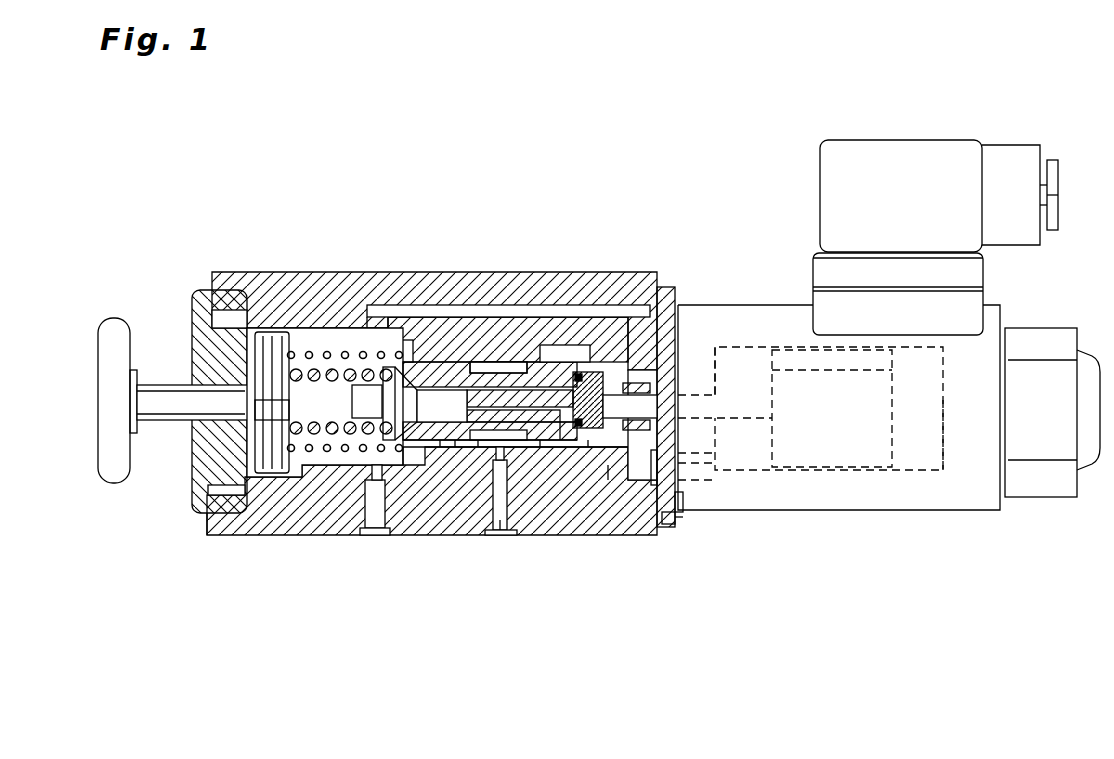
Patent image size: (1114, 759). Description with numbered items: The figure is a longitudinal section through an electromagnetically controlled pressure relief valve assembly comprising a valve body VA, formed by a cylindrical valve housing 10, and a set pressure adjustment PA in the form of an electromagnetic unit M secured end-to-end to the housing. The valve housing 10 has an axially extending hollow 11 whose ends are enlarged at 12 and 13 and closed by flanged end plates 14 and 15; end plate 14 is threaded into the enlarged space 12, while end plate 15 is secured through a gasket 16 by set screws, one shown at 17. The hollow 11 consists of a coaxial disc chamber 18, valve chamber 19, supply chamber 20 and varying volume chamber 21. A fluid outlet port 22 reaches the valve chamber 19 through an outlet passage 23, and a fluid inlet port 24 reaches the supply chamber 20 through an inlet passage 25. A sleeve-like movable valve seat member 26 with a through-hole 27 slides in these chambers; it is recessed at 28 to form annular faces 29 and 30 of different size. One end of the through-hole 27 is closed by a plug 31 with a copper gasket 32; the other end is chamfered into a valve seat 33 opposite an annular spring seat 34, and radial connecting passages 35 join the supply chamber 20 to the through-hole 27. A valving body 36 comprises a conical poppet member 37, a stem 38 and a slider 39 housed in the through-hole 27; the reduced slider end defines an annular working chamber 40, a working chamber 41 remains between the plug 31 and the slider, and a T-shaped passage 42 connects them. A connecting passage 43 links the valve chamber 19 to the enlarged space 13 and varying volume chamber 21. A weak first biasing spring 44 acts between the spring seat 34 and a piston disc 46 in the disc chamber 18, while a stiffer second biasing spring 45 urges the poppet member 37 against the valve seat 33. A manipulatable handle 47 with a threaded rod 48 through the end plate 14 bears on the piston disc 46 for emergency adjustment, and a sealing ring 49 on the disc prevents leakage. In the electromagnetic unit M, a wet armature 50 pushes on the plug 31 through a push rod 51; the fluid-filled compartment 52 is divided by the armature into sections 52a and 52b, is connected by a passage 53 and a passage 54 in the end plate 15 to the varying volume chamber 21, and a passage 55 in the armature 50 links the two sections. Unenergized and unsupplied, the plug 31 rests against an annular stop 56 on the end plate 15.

The valve housing 10 is at (240, 518).
The axially extending hollow 11 is at (262, 520).
The enlarged space 12 is at (200, 495).
The enlarged space 13 is at (662, 505).
The flanged end plate 14 is at (205, 510).
The flanged end plate 15 is at (670, 525).
The gasket 16 is at (660, 530).
The set screw 17 is at (688, 508).
The disc chamber 18 is at (275, 340).
The valve chamber 19 is at (358, 275).
The supply chamber 20 is at (520, 300).
The varying volume chamber 21 is at (632, 335).
The fluid outlet port 22 is at (378, 512).
The outlet passage 23 is at (375, 505).
The fluid inlet port 24 is at (508, 480).
The inlet passage 25 is at (540, 442).
The movable valve seat member 26 is at (478, 445).
The through-hole 27 is at (455, 442).
The radially inwardly recessed portion 28 is at (560, 428).
The annular face 29 is at (487, 330).
The annular face 30 is at (537, 345).
The plug 31 is at (586, 442).
The copper gasket 32 is at (612, 375).
The valve seat 33 is at (440, 445).
The annular spring seat 34 is at (410, 300).
The connecting passage 35 is at (500, 525).
The valving body 36 is at (385, 425).
The poppet member 37 is at (398, 362).
The stem 38 is at (377, 405).
The slider 39 is at (430, 385).
The annular working chamber 40 is at (468, 372).
The working chamber 41 is at (588, 372).
The T-shaped passage 42 is at (566, 362).
The connecting passage 43 is at (666, 292).
The first biasing spring 44 is at (297, 352).
The second biasing spring 45 is at (333, 355).
The piston disc 46 is at (268, 348).
The manipulatable handle 47 is at (98, 370).
The externally threaded rod 48 is at (150, 395).
The sealing ring 49 is at (270, 440).
The wet armature 50 is at (832, 470).
The push rod 51 is at (686, 395).
The compartment 52 is at (920, 430).
The compartment section 52a is at (745, 350).
The compartment section 52b is at (940, 480).
The passage 53 is at (700, 485).
The passage 54 is at (690, 520).
The passage 55 is at (803, 365).
The annular stop 56 is at (606, 470).
The electromagnetic unit M is at (880, 514).
The valve body VA is at (443, 173).
The set pressure adjustment PA is at (803, 172).